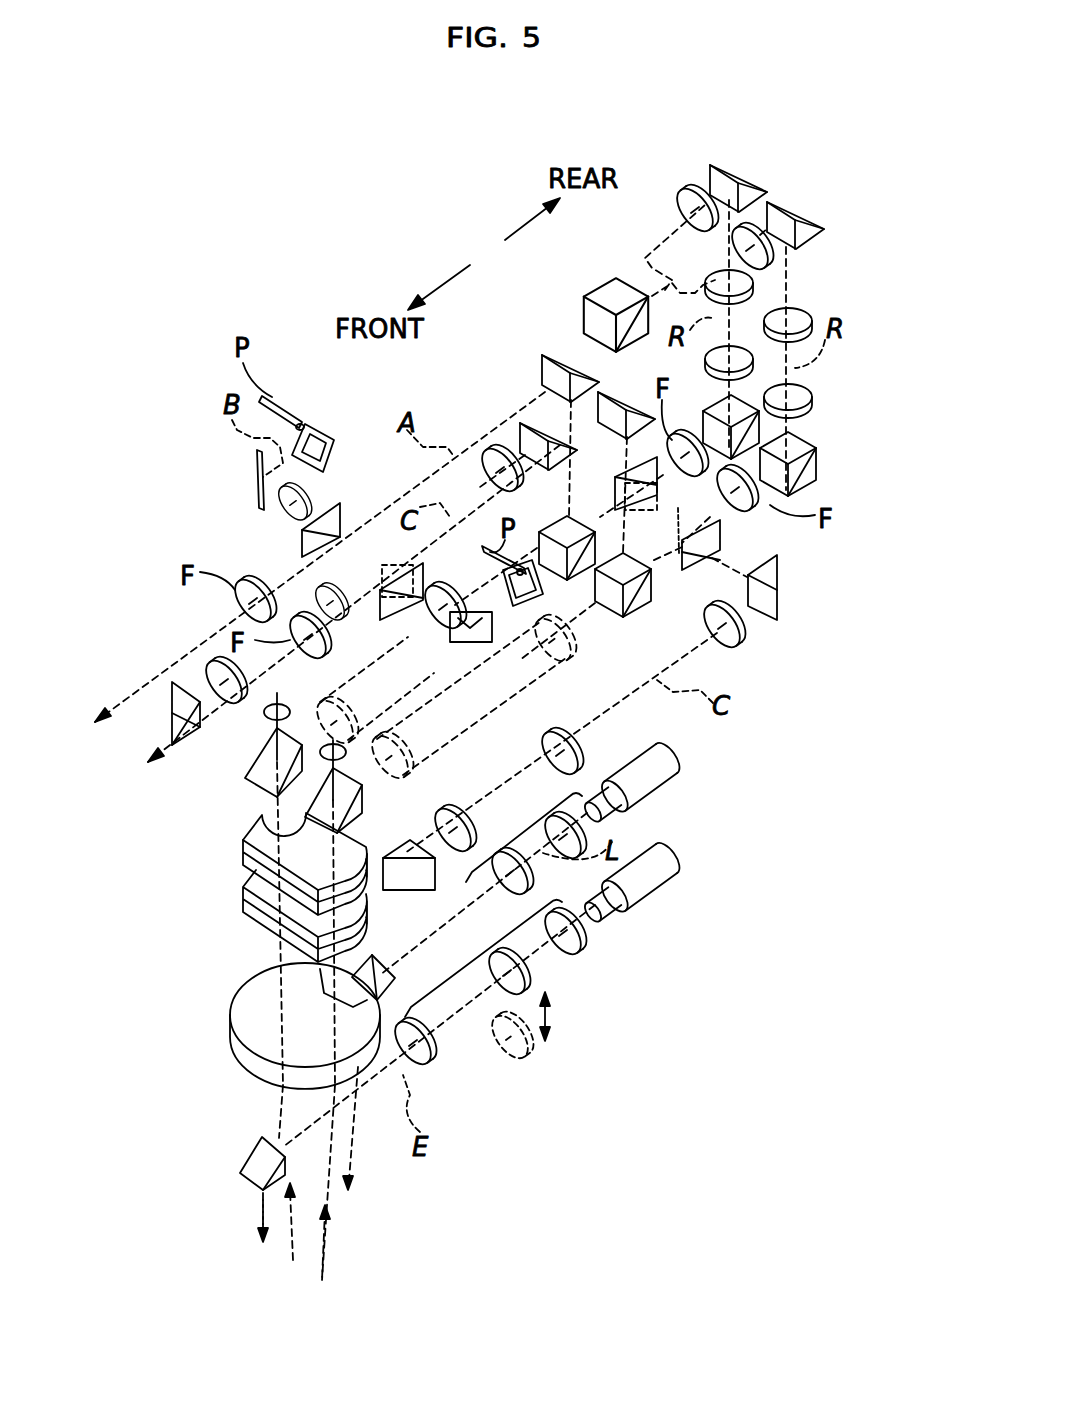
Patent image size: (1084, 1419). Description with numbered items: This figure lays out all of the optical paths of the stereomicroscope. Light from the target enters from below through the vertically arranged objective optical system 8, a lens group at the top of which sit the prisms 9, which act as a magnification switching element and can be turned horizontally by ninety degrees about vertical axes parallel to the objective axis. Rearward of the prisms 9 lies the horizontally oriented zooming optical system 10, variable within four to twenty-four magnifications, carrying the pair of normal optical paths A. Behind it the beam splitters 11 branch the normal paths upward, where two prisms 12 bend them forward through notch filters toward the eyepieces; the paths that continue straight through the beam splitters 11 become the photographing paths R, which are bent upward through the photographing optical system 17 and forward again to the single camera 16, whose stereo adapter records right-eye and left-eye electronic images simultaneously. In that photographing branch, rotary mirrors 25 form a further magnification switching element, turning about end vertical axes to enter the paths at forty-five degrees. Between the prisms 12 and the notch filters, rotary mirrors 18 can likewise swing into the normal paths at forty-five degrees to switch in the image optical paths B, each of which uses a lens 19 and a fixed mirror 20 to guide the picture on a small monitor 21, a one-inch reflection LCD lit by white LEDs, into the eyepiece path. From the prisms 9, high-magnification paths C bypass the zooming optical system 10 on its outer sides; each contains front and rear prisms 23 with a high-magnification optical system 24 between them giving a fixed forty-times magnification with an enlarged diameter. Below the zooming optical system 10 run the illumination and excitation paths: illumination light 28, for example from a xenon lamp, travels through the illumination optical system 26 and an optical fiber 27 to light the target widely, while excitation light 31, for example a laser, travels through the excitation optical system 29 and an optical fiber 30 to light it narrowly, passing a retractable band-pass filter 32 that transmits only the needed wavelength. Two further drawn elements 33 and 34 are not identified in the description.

The objective optical system 8 is at (208, 1050).
The prisms 9 is at (250, 758).
The zooming optical system 10 is at (340, 700).
The beam splitters 11 is at (552, 518).
The prisms 12 is at (556, 356).
The camera 16 is at (605, 292).
The photographing optical system 17 is at (847, 205).
The rotary mirrors 18 is at (340, 505).
The lens 19 is at (282, 520).
The fixed mirror 20 is at (257, 472).
The small monitors 21 is at (317, 423).
The prisms 23 is at (528, 420).
The high-magnification optical system 24 is at (490, 450).
The rotary mirrors 25 is at (625, 470).
The illumination optical system 26 is at (530, 810).
The optical fiber 27 is at (686, 766).
The illumination light 28 is at (346, 1239).
The excitation optical system 29 is at (490, 985).
The optical fiber 30 is at (686, 866).
The excitation light 31 is at (267, 1240).
The band-pass filter 32 is at (548, 1012).
The mirror 33 is at (380, 955).
The prism 34 is at (247, 1153).